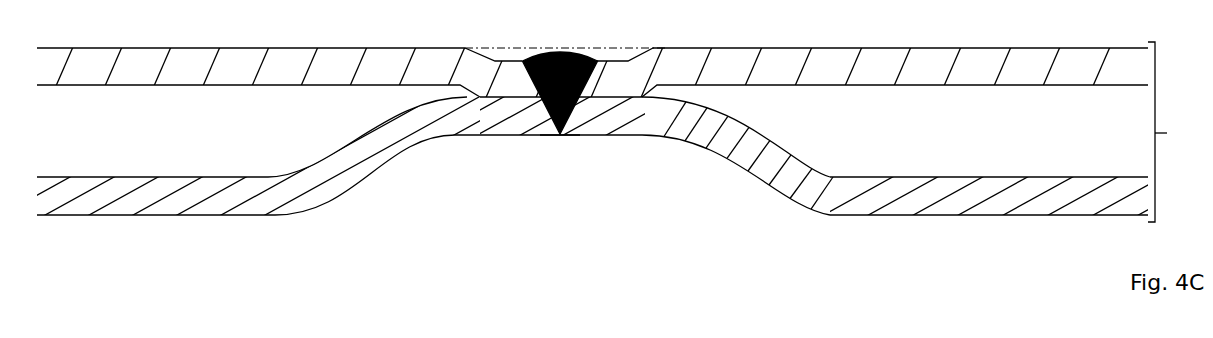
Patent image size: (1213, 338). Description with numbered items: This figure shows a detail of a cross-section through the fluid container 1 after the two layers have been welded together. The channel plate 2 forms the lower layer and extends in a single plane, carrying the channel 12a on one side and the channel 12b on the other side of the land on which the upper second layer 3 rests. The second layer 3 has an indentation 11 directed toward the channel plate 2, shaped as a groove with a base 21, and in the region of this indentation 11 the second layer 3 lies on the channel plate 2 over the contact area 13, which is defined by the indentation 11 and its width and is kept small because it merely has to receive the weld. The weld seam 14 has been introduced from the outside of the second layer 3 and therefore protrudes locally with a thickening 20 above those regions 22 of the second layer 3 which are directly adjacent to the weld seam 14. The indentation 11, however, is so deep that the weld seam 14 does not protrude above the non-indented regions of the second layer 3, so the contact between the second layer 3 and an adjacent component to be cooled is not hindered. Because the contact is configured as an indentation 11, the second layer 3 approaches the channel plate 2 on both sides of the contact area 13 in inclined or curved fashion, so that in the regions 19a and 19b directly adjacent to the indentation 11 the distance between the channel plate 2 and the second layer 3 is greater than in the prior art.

The fluid container 1 is at (1164, 132).
The channel plate 2 is at (1017, 203).
The second layer 3 is at (1018, 60).
The indentation 11 is at (565, 47).
The channel 12a is at (247, 127).
The channel 12b is at (827, 122).
The contact area 13 is at (523, 100).
The weld seam 14 is at (561, 134).
The region adjacent to the indentation 19a is at (452, 92).
The region adjacent to the indentation 19b is at (670, 93).
The deposit of the weld seam 20 is at (547, 52).
The base 21 is at (600, 58).
The regions directly adjacent to the weld seam 22 is at (521, 62).